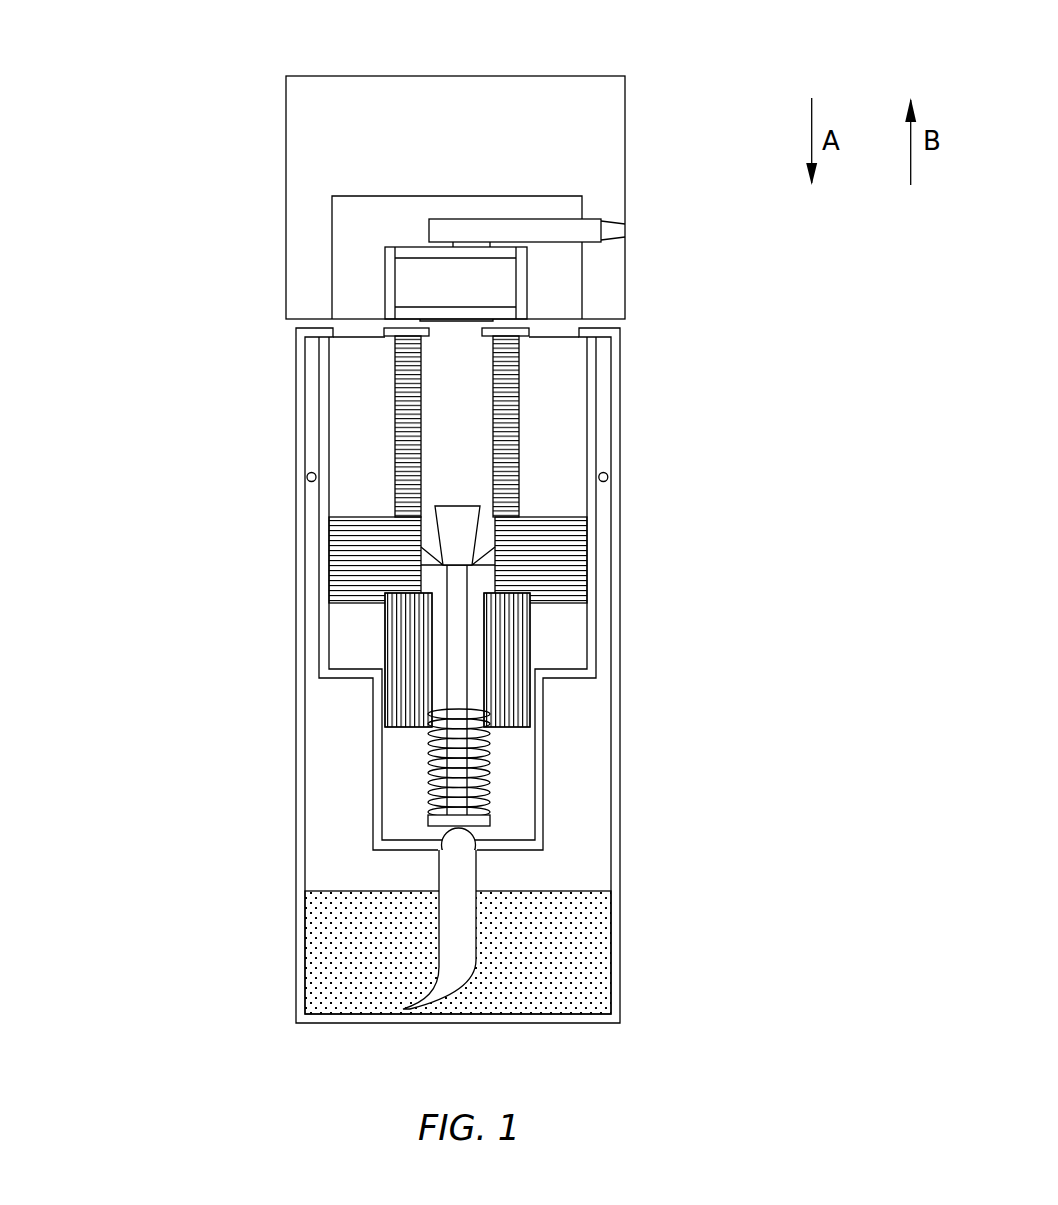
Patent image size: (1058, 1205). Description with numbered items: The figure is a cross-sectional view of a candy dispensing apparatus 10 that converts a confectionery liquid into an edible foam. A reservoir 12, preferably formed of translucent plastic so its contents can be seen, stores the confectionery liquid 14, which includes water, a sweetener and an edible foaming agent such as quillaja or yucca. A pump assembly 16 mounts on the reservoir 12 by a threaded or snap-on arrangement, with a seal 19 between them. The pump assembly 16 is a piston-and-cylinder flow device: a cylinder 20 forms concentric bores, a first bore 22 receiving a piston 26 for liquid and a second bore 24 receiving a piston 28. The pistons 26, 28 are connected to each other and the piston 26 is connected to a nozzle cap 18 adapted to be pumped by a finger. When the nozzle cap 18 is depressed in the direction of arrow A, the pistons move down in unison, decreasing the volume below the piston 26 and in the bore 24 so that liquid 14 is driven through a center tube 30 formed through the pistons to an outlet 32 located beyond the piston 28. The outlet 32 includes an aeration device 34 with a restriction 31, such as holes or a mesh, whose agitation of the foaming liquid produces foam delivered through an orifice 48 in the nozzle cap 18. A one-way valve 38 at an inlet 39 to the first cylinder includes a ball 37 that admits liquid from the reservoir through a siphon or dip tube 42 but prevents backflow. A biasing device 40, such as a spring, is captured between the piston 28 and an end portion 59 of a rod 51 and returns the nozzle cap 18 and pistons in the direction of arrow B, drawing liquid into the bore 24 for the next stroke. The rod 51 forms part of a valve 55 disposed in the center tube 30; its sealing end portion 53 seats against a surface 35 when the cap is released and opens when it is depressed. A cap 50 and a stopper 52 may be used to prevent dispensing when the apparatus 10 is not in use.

The dispensing apparatus 10 is at (125, 258).
The reservoir 12 is at (297, 545).
The confectionery liquid 14 is at (567, 938).
The pump assembly 16 is at (593, 543).
The nozzle cap 18 is at (570, 195).
The seal 19 is at (612, 482).
The cylinder 20 is at (578, 682).
The first bore 22 is at (348, 413).
The second bore 24 is at (518, 775).
The piston 26 is at (362, 518).
The piston 28 is at (392, 632).
The center tube 30 is at (457, 403).
The restriction 31 is at (415, 305).
The outlet 32 is at (448, 325).
The aeration device 34 is at (528, 292).
The surface 35 is at (480, 567).
The ball 37 is at (373, 850).
The one-way valve 38 is at (430, 862).
The inlet 39 is at (443, 838).
The biasing device 40 is at (490, 793).
The dip tube 42 is at (478, 877).
The orifice 48 is at (590, 219).
The cap 50 is at (488, 76).
The rod 51 is at (457, 640).
The stopper 52 is at (622, 233).
The sealing end portion 53 is at (441, 500).
The valve 55 is at (468, 492).
The end portion 59 is at (437, 826).